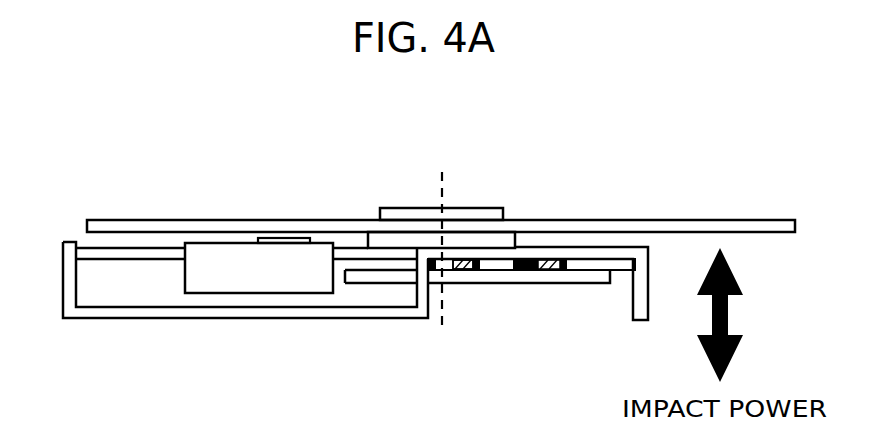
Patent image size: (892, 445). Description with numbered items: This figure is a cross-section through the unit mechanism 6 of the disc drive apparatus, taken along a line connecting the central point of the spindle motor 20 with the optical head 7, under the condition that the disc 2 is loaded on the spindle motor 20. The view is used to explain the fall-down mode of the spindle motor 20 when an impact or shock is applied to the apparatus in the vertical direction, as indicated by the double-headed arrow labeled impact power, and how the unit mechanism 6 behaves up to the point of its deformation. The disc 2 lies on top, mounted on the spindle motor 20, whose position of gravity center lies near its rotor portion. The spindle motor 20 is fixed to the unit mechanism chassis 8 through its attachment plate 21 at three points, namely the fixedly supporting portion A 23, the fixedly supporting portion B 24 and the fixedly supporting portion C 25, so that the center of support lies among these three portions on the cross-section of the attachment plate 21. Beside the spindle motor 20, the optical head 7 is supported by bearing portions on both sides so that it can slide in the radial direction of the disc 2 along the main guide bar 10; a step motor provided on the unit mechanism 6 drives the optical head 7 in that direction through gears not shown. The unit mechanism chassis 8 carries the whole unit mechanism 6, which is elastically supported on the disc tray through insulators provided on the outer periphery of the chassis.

The disc 2 is at (613, 220).
The unit mechanism 6 is at (549, 174).
The optical head 7 is at (308, 257).
The unit mechanism chassis 8 is at (112, 318).
The main guide bar 10 is at (137, 259).
The spindle motor 20 is at (371, 186).
The attachment plate 21 is at (515, 270).
The fixedly supporting portion A 23 is at (465, 270).
The fixedly supporting portion B 24 is at (463, 264).
The fixedly supporting portion C 25 is at (550, 270).